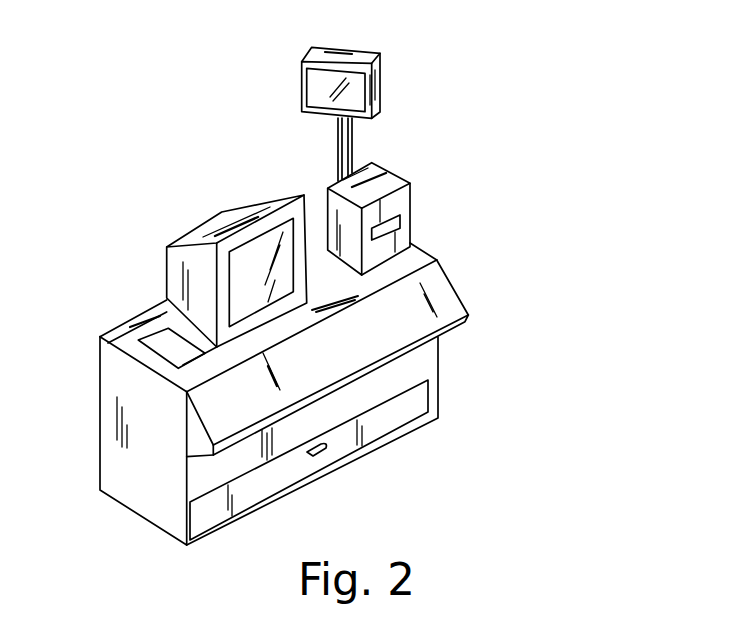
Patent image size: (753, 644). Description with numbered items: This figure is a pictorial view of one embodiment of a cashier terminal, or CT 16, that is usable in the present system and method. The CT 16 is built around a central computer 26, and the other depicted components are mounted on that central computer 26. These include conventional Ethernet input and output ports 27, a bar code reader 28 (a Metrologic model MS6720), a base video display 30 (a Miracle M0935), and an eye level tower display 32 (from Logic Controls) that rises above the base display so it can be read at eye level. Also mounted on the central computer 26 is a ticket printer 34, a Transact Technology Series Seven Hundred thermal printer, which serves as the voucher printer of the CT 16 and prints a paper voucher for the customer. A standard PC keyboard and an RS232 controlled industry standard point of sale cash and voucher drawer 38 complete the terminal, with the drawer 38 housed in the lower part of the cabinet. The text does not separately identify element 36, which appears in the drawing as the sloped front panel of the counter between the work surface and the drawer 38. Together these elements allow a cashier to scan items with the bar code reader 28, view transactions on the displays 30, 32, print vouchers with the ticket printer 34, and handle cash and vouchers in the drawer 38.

The cashier terminal 16 is at (542, 185).
The central computer 26 is at (418, 262).
The Ethernet input and output ports 27 is at (128, 325).
The bar code reader 28 is at (175, 350).
The base video display 30 is at (221, 225).
The eye level tower display 32 is at (322, 90).
The ticket printer 34 is at (382, 176).
The sloped front panel 36 is at (438, 297).
The point of sale cash and voucher drawer 38 is at (410, 408).